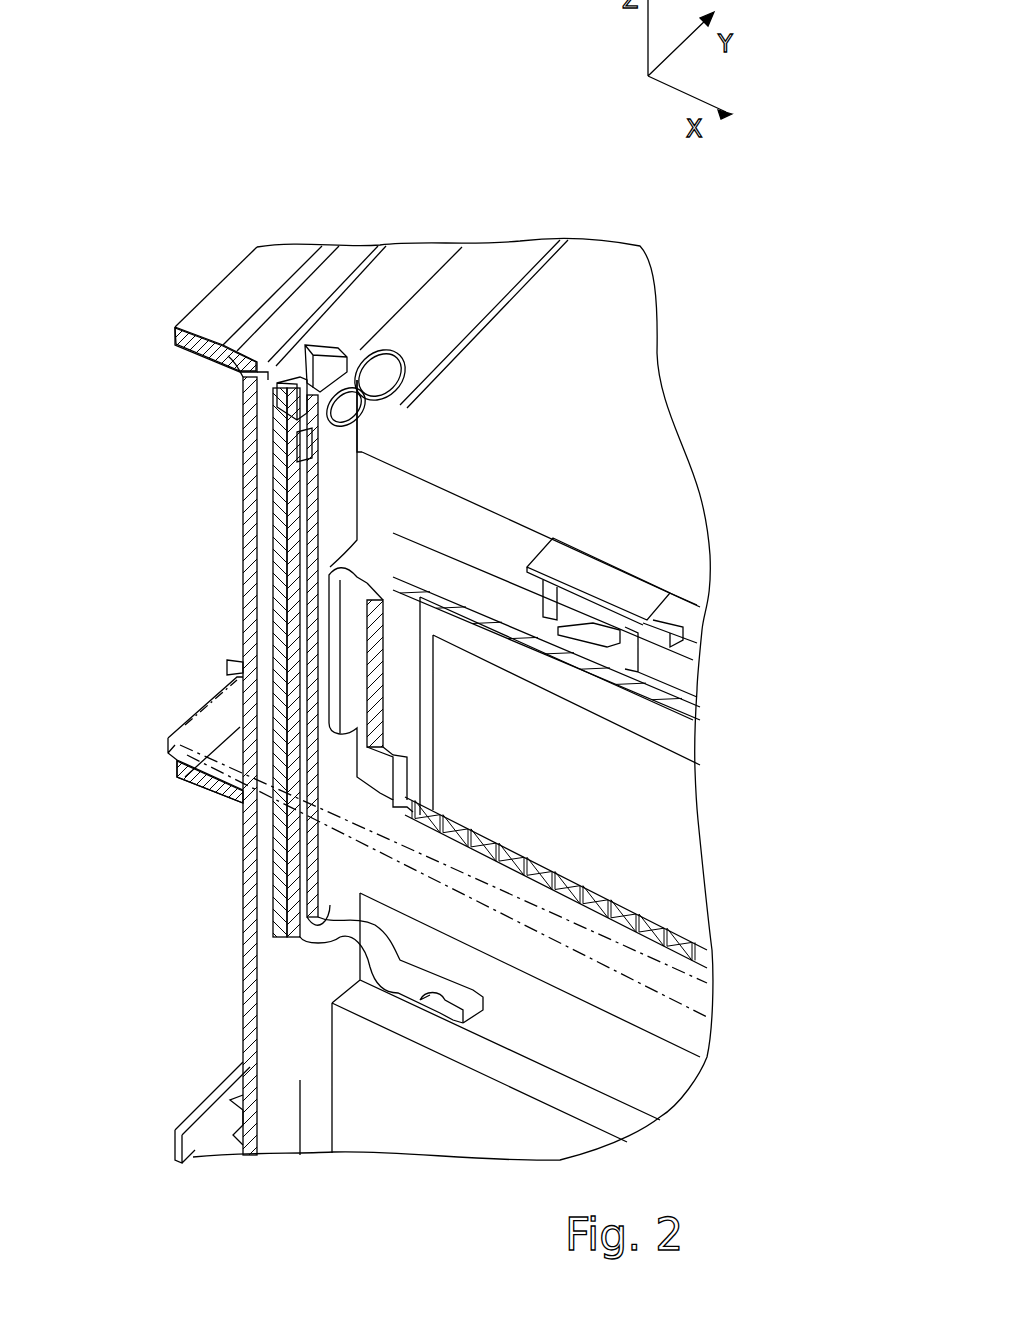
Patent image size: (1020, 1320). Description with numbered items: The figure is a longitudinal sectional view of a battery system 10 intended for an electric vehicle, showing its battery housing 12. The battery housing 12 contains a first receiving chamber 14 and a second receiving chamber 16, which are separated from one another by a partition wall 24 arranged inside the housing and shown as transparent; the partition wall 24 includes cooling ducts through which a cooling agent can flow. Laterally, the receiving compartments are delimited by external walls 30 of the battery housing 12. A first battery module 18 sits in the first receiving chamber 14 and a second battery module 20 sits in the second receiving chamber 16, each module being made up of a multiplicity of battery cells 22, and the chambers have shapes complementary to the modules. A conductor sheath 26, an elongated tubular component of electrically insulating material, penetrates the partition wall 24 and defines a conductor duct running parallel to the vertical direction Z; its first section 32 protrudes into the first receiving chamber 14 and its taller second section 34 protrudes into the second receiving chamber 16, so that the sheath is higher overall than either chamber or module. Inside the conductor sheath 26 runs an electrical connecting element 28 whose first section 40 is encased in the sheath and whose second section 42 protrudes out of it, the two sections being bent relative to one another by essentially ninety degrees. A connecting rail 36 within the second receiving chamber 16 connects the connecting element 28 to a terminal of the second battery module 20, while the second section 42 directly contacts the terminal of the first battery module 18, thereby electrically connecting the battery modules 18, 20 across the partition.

The battery system 10 is at (146, 288).
The battery housing 12 is at (228, 256).
The first receiving chamber 14 is at (306, 1065).
The second receiving chamber 16 is at (268, 484).
The first battery module 18 is at (700, 1043).
The second battery module 20 is at (620, 440).
The battery cells 22 is at (470, 1110).
The partition wall 24 is at (683, 990).
The conductor sheath 26 is at (268, 602).
The electrical connecting element 28 is at (296, 957).
The external walls 30 is at (243, 410).
The first section of the conductor sheath 32 is at (330, 860).
The second section of the conductor sheath 34 is at (345, 468).
The connecting rail 36 is at (480, 291).
The first section of the connecting element 40 is at (287, 748).
The second section of the connecting element 42 is at (425, 995).